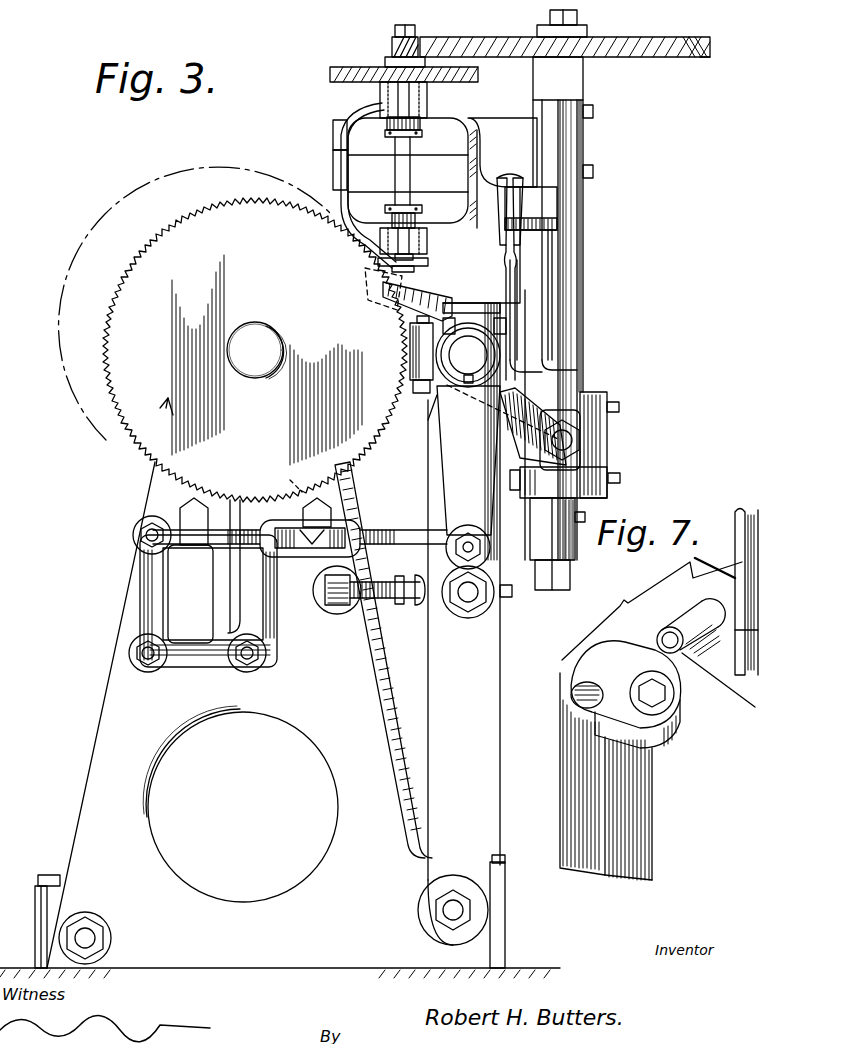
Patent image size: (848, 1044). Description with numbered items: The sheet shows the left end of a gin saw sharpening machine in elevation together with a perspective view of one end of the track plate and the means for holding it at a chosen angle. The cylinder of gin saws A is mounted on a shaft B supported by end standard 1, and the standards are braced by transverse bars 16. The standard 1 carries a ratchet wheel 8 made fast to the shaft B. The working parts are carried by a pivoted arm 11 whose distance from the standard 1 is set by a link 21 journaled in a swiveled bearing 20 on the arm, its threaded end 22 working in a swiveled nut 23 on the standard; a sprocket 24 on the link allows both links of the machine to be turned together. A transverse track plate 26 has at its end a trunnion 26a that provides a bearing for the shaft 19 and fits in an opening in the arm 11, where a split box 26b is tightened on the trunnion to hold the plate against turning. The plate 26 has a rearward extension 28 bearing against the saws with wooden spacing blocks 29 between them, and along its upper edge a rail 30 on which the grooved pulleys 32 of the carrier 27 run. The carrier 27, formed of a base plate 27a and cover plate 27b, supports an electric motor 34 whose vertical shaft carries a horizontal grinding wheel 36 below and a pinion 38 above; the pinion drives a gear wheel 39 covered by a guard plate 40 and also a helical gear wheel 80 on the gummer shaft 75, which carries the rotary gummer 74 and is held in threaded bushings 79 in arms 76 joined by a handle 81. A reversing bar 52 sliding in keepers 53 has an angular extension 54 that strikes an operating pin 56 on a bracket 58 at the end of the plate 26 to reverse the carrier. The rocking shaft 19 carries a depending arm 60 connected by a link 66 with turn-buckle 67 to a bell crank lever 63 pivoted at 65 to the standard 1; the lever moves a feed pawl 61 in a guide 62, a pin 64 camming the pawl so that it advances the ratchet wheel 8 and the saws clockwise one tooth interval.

In FIG. 3, the end standard 1 is at (392, 690).
In FIG. 3, the ratchet wheel 8 is at (236, 462).
In FIG. 3, the arm 11 is at (500, 748).
In FIG. 7, the arm 11 is at (555, 812).
In FIG. 3, the transverse bars 16 is at (102, 928).
In FIG. 3, the shaft 19 is at (482, 372).
In FIG. 3, the swiveled bearing 20 is at (470, 618).
In FIG. 3, the link 21 is at (406, 600).
In FIG. 3, the threaded end 22 is at (370, 615).
In FIG. 3, the swiveled nut 23 is at (337, 614).
In FIG. 3, the sprocket 24 is at (280, 552).
In FIG. 3, the track plate 26 is at (545, 297).
In FIG. 7, the track plate 26 is at (712, 565).
In FIG. 7, the trunnions 26a is at (670, 626).
In FIG. 3, the split boxes 26b is at (410, 358).
In FIG. 7, the split boxes 26b is at (670, 740).
In FIG. 3, the carrier 27 is at (580, 262).
In FIG. 3, the base plate 27a is at (546, 288).
In FIG. 3, the cover plate 27b is at (578, 318).
In FIG. 3, the rearward extension 28 is at (452, 308).
In FIG. 3, the spacing blocks 29 is at (410, 302).
In FIG. 3, the rail 30 is at (517, 258).
In FIG. 7, the rail 30 is at (740, 512).
In FIG. 3, the grooved pulleys 32 is at (506, 200).
In FIG. 3, the electric motor 34 is at (333, 132).
In FIG. 3, the grinding wheel 36 is at (430, 270).
In FIG. 3, the pinion 38 is at (392, 47).
In FIG. 3, the gear wheel 39 is at (697, 58).
In FIG. 3, the guard plate 40 is at (680, 38).
In FIG. 3, the reversing bar 52 is at (582, 440).
In FIG. 3, the keepers 53 is at (608, 478).
In FIG. 3, the angular extension 54 is at (592, 460).
In FIG. 3, the operating pin 56 is at (620, 406).
In FIG. 3, the brackets 58 is at (570, 380).
In FIG. 7, the brackets 58 is at (748, 668).
In FIG. 3, the depending arm 60 is at (468, 460).
In FIG. 3, the feed pawl 61 is at (262, 597).
In FIG. 3, the guide 62 is at (262, 636).
In FIG. 3, the bell crank lever 63 is at (200, 668).
In FIG. 3, the pin 64 is at (282, 490).
In FIG. 3, the pivot 65 is at (145, 668).
In FIG. 3, the link 66 is at (393, 535).
In FIG. 3, the turn-buckle 67 is at (356, 524).
In FIG. 3, the rotary gummer 74 is at (422, 258).
In FIG. 3, the gummer shaft 75 is at (413, 185).
In FIG. 3, the arms 76 is at (430, 102).
In FIG. 3, the bushings 79 is at (393, 150).
In FIG. 3, the helical gear wheel 80 is at (330, 75).
In FIG. 3, the handle 81 is at (368, 110).
In FIG. 3, the gin saws A is at (255, 200).
In FIG. 3, the shaft B is at (250, 368).